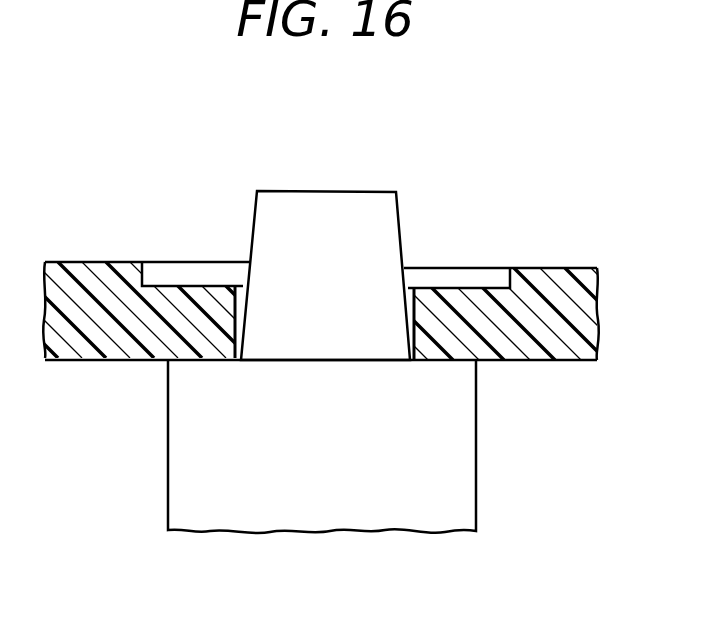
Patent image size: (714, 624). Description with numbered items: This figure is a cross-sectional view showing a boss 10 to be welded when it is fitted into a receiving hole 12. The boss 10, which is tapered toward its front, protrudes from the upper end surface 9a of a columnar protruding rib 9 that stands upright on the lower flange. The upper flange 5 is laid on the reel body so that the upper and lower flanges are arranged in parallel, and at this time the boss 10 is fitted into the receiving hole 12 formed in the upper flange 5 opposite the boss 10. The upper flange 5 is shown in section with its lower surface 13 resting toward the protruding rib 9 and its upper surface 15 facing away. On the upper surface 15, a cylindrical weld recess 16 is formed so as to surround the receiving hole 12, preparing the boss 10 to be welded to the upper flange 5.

The upper flange 5 is at (91, 256).
The protruding rib 9 is at (460, 503).
The upper end surface of protruding rib 9a is at (442, 363).
The boss 10 is at (386, 198).
The receiving hole 12 is at (240, 306).
The lower surface of upper flange 13 is at (85, 361).
The upper surface 15 is at (573, 268).
The weld recess 16 is at (463, 275).